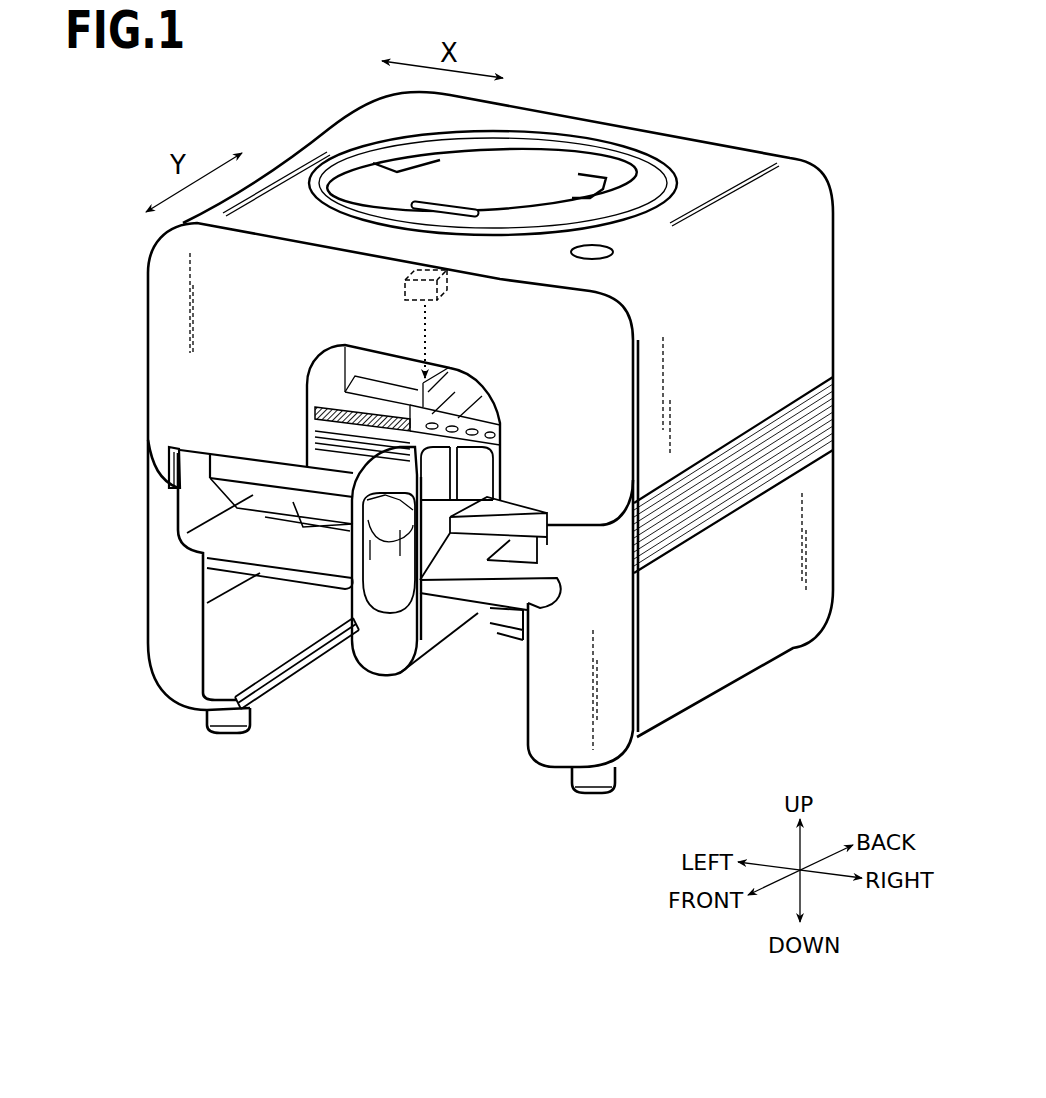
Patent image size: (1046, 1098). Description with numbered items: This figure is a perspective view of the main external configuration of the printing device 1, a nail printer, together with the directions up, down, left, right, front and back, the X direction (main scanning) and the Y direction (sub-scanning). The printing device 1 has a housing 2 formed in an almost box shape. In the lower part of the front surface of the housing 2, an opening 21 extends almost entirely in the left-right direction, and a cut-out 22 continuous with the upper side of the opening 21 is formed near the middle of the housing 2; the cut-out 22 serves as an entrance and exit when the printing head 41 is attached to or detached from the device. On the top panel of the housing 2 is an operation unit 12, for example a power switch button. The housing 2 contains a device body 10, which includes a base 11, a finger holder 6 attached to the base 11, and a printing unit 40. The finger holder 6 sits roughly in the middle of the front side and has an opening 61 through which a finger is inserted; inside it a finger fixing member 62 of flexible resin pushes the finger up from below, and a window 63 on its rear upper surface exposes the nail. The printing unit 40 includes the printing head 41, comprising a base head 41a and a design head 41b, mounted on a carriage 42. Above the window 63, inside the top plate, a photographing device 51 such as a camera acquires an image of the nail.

The printing device 1 is at (713, 103).
The housing 2 is at (797, 155).
The operation unit 12 is at (600, 252).
The cut-out 22 is at (315, 396).
The carriage 42 is at (412, 393).
The photographing device 51 is at (405, 288).
The window 63 is at (392, 467).
The printing unit 40 is at (333, 452).
The base 11 is at (290, 487).
The printing head 41 is at (525, 509).
The base head 41a is at (458, 466).
The design head 41b is at (494, 508).
The finger holder 6 is at (413, 675).
The finger fixing member 62 is at (372, 598).
The opening 61 is at (373, 603).
The opening 21 is at (217, 633).
The device body 10 is at (498, 587).